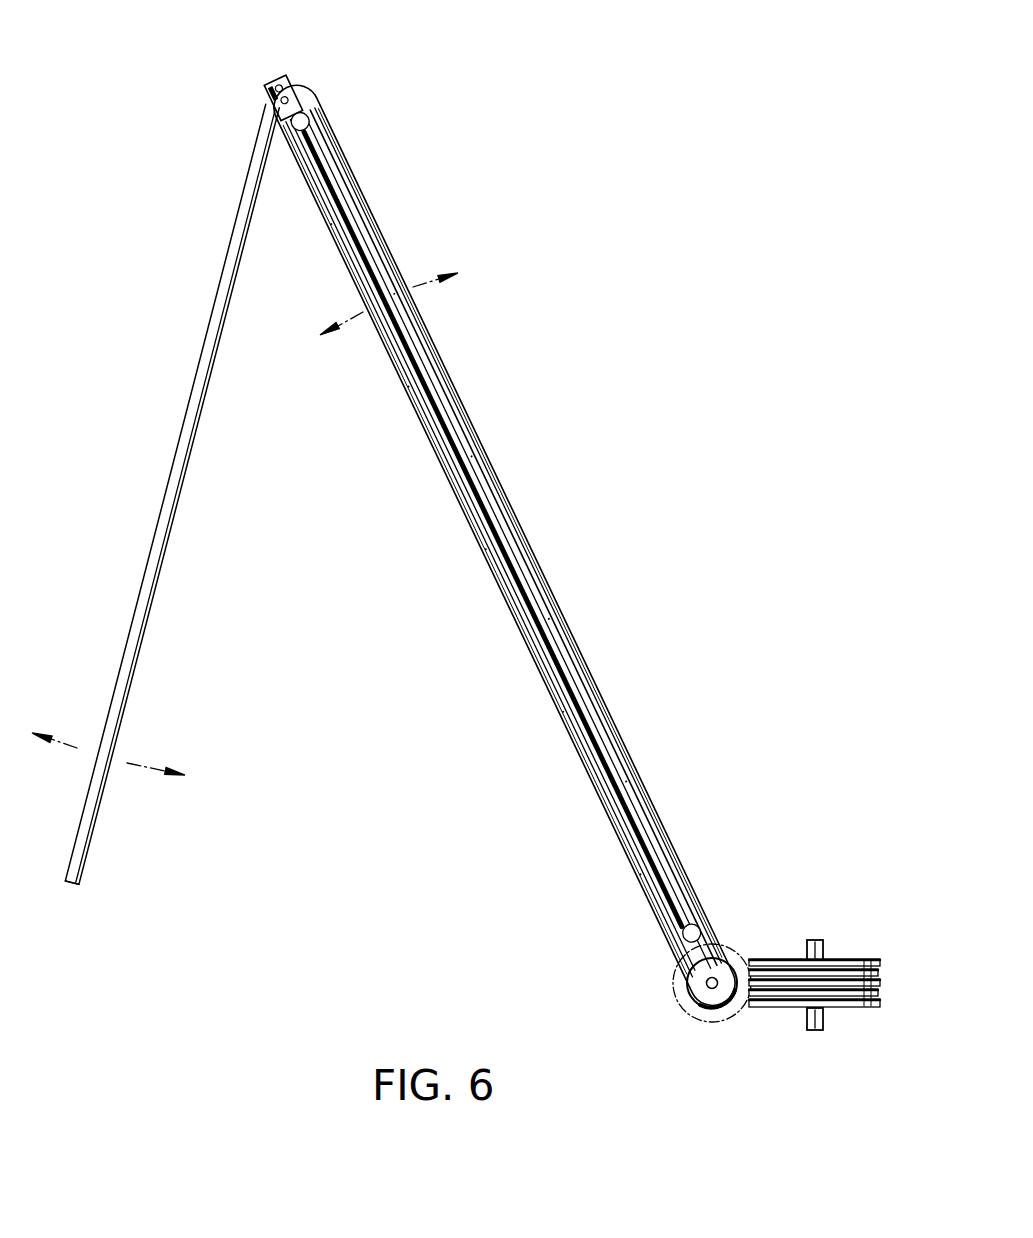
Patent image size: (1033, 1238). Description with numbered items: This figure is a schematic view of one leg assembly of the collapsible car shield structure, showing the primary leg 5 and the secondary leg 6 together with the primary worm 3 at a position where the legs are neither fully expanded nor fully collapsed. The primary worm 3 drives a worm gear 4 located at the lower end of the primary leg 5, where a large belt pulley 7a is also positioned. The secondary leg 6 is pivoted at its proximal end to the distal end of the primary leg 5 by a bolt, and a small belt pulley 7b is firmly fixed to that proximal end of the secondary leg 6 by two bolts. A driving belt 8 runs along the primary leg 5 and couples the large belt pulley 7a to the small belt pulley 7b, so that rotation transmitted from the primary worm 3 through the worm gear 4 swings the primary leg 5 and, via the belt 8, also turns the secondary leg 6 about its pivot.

The primary worm 3 is at (845, 960).
The worm gear 4 is at (703, 1013).
The primary leg 5 is at (452, 432).
The secondary leg 6 is at (152, 593).
The large belt pulley 7a is at (700, 995).
The small belt pulley 7b is at (273, 82).
The driving belt 8 is at (446, 380).